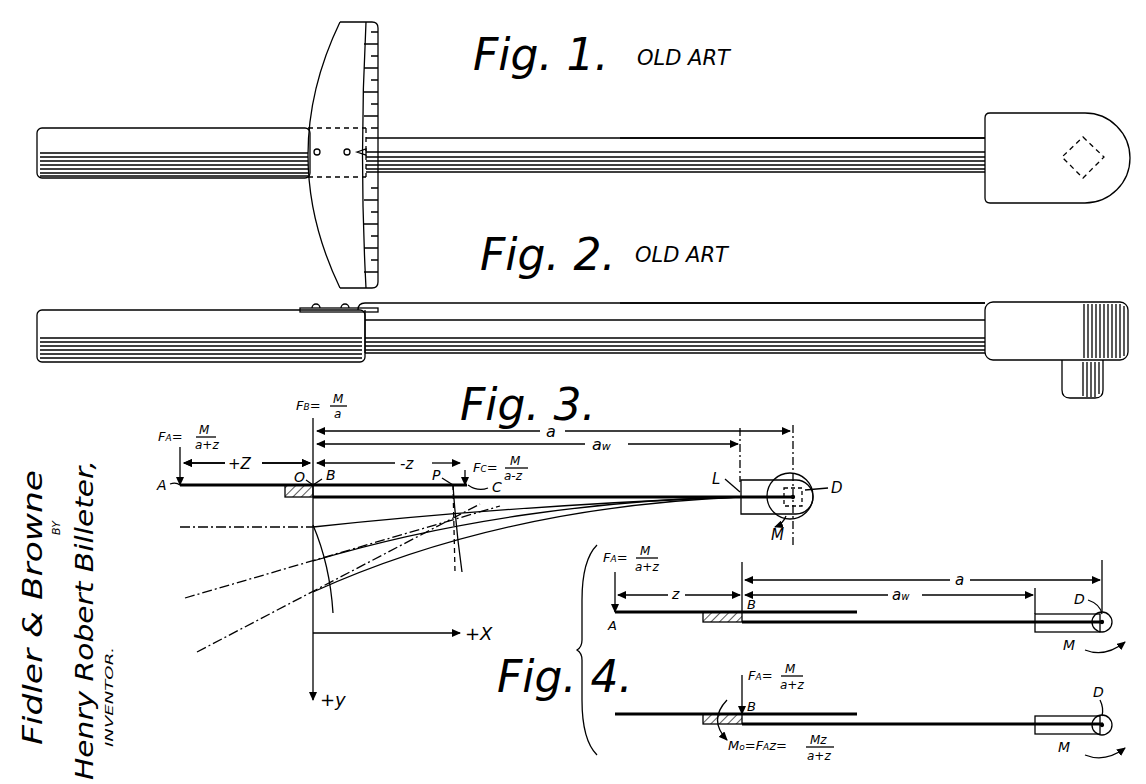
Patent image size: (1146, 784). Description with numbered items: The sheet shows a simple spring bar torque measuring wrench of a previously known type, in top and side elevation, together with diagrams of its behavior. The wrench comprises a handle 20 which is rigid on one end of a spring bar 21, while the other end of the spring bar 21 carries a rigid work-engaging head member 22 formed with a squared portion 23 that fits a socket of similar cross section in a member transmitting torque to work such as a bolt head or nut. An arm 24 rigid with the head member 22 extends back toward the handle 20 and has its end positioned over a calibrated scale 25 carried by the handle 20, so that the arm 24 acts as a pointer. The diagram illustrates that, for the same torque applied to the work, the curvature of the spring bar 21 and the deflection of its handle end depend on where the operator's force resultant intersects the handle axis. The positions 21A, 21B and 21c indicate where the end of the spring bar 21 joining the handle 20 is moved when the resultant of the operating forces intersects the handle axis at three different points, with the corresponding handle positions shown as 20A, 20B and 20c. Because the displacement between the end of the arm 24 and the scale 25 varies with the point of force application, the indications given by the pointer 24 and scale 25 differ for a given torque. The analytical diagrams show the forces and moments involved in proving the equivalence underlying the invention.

In FIG. 1, the handle 20 is at (155, 137).
In FIG. 2, the handle 20 is at (137, 318).
In FIG. 1, the spring bar 21 is at (657, 140).
In FIG. 2, the spring bar 21 is at (626, 308).
In FIG. 3, the spring bar 21 is at (580, 497).
In FIG. 1, the work-engaging head member 22 is at (1032, 120).
In FIG. 2, the work-engaging head member 22 is at (1015, 310).
In FIG. 3, the work-engaging head member 22 is at (753, 482).
In FIG. 1, the squared portion 23 is at (1073, 167).
In FIG. 2, the squared portion 23 is at (1072, 380).
In FIG. 1, the arm 24 is at (814, 155).
In FIG. 2, the arm 24 is at (773, 305).
In FIG. 1, the calibrated scale 25 is at (322, 64).
In FIG. 2, the calibrated scale 25 is at (330, 305).
In FIG. 3, the handle position 20c is at (229, 529).
In FIG. 3, the handle position 20B is at (322, 560).
In FIG. 3, the handle position 20A is at (322, 589).
In FIG. 3, the spring bar end position 21c is at (313, 527).
In FIG. 3, the spring bar end position 21B is at (313, 561).
In FIG. 3, the spring bar end position 21A is at (313, 592).